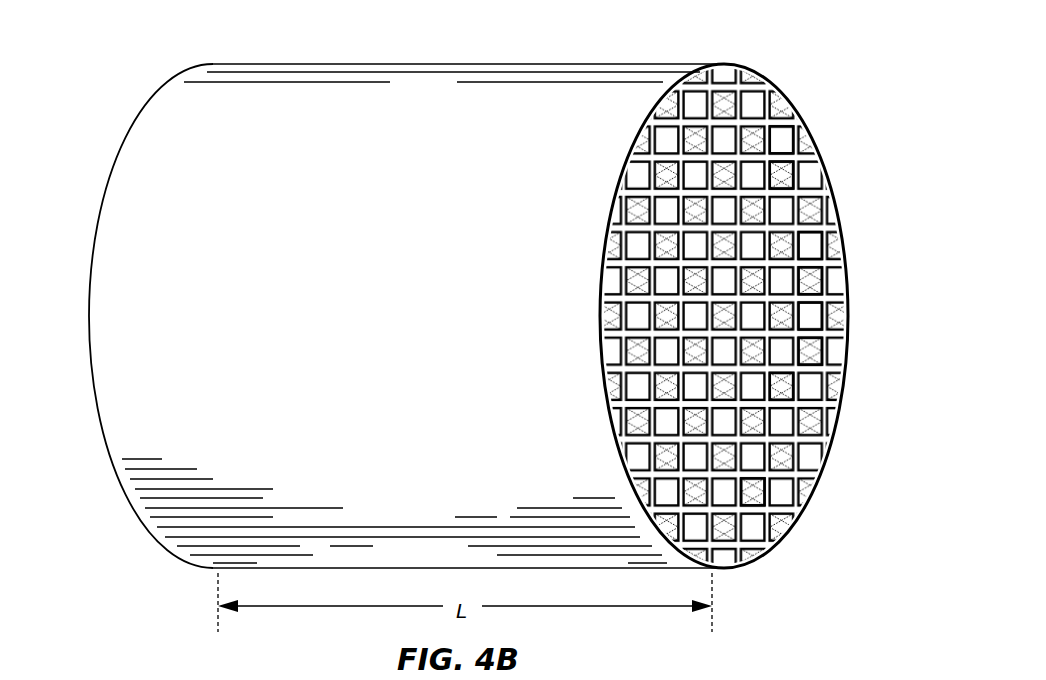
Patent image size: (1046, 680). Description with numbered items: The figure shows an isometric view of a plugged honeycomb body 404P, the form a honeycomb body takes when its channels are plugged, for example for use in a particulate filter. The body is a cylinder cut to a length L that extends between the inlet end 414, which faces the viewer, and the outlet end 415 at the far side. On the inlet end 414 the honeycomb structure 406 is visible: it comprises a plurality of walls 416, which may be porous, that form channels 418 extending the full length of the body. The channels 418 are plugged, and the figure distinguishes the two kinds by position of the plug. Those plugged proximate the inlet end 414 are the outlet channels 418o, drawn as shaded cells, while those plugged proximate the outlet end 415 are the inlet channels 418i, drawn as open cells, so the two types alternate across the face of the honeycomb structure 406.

The plugged honeycomb body 404P is at (667, 63).
The outlet end 415 is at (143, 116).
The inlet end 414 is at (852, 214).
The honeycomb structure 406 is at (815, 478).
The channels 418 is at (815, 243).
The inlet channels 418i is at (778, 140).
The outlet channels 418o is at (818, 357).
The walls 416 is at (797, 176).